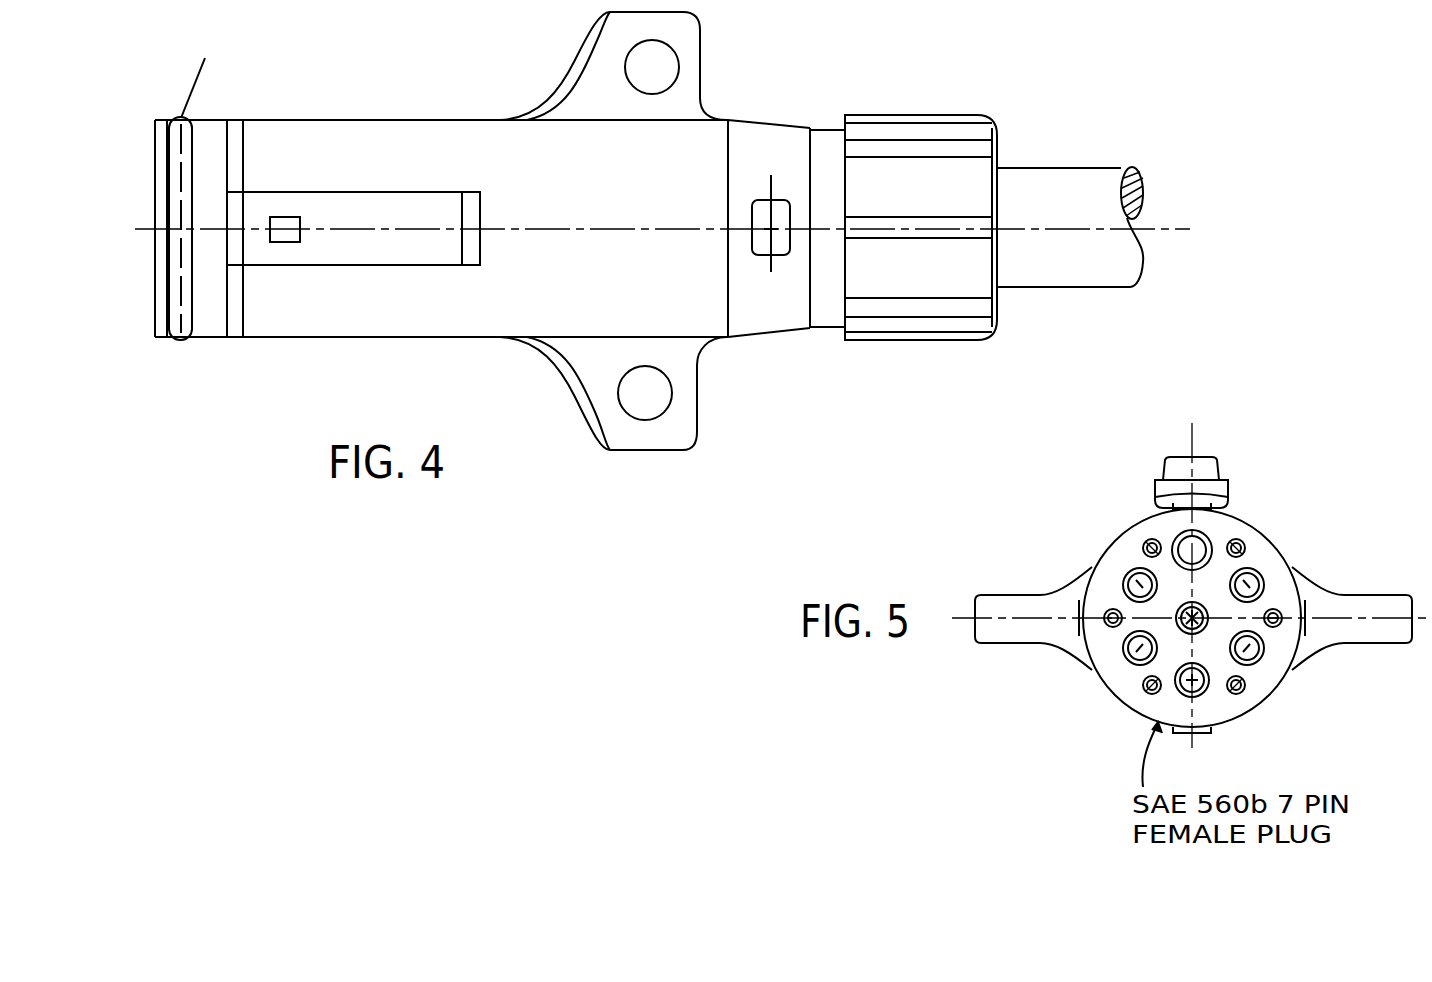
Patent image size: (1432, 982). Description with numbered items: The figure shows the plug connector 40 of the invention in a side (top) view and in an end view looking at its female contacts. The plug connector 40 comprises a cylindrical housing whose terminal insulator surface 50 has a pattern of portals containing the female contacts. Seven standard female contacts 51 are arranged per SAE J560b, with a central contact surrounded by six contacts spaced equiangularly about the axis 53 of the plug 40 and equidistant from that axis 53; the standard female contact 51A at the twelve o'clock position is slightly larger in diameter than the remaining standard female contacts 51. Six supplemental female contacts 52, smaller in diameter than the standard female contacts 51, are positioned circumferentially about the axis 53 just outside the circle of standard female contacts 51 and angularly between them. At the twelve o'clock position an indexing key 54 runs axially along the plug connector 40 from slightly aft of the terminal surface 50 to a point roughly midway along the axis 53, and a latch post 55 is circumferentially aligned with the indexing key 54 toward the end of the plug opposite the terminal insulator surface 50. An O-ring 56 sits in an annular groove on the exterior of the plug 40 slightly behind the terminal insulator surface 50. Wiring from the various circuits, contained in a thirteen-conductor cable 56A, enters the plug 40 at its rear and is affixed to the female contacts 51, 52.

In FIG. 4, the plug connector 40 is at (442, 118).
In FIG. 4, the terminal insulator surface 50 is at (155, 278).
In FIG. 5, the terminal insulator surface 50 is at (1268, 583).
In FIG. 5, the standard female contacts 51 is at (1128, 578).
In FIG. 5, the female contact 51A is at (1173, 538).
In FIG. 5, the supplemental female contacts 52 is at (1142, 535).
In FIG. 4, the axis 53 is at (592, 229).
In FIG. 4, the indexing key 54 is at (370, 267).
In FIG. 5, the indexing key 54 is at (1232, 506).
In FIG. 4, the latch post 55 is at (785, 258).
In FIG. 5, the latch post 55 is at (1203, 455).
In FIG. 4, the O-ring 56 is at (180, 340).
In FIG. 4, the thirteen-conductor cable 56A is at (1076, 168).